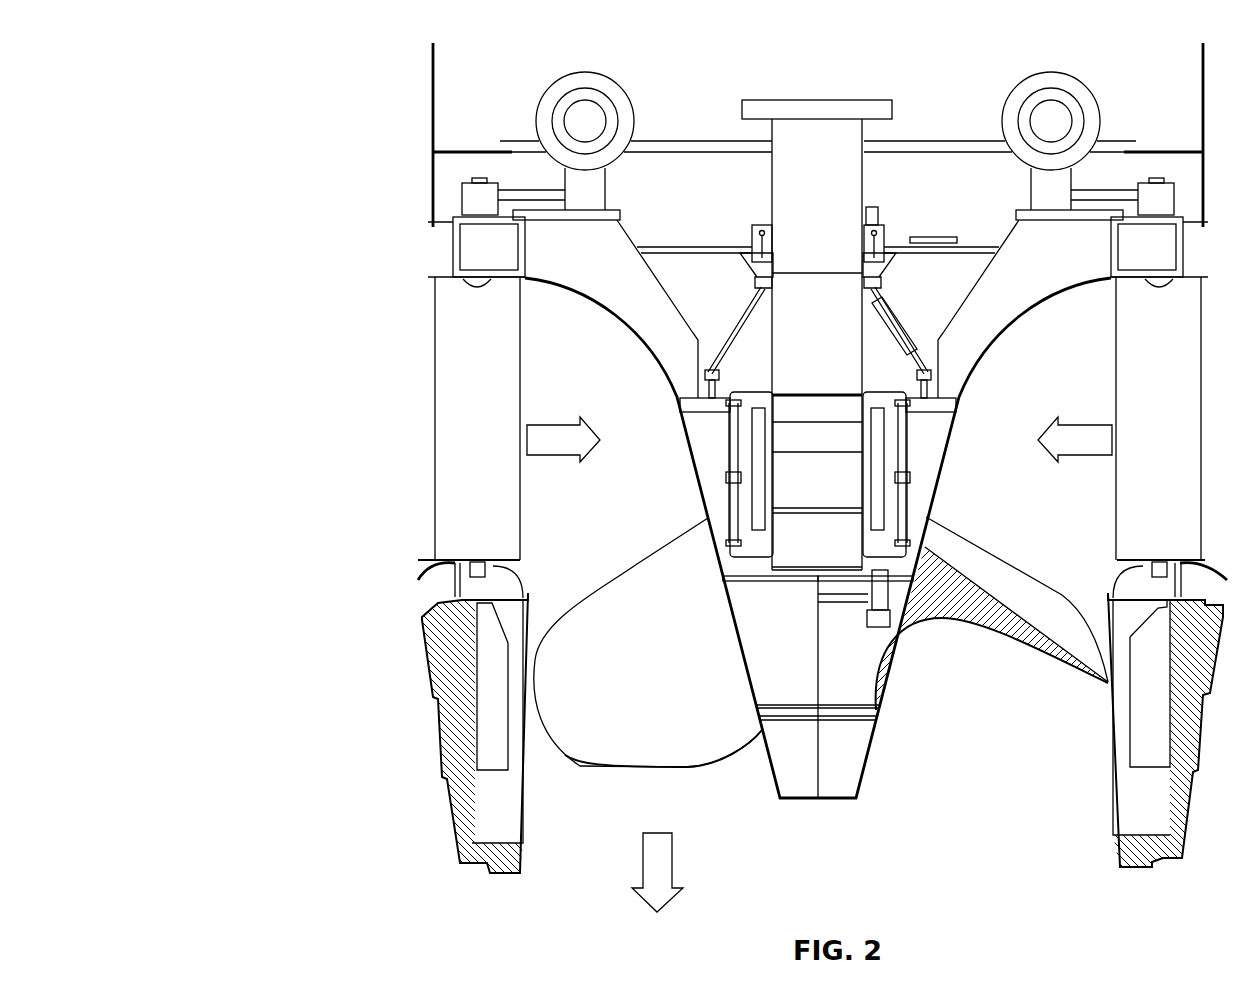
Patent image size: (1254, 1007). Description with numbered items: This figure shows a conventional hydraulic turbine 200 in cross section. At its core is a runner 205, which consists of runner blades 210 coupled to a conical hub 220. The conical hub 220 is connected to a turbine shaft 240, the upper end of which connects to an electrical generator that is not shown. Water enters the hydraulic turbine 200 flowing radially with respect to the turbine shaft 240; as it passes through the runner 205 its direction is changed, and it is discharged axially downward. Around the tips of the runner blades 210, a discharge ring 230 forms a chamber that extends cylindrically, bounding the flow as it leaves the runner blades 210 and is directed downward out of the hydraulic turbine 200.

The hydraulic turbine 200 is at (285, 78).
The runner 205 is at (630, 375).
The runner blades 210 is at (661, 680).
The conical hub 220 is at (790, 641).
The discharge ring 230 is at (522, 767).
The turbine shaft 240 is at (834, 195).